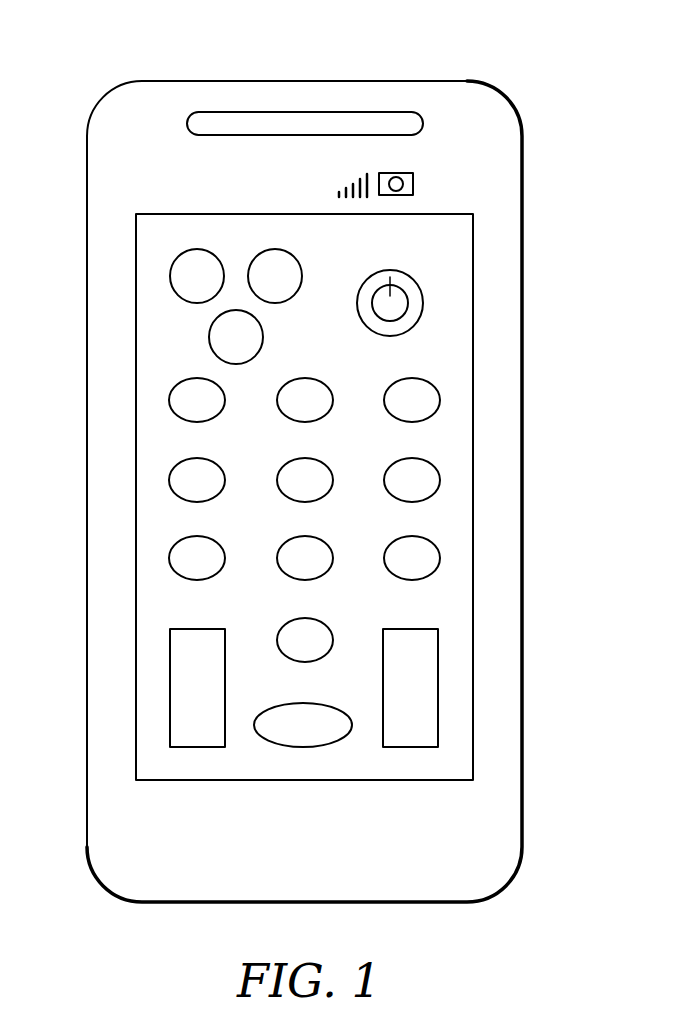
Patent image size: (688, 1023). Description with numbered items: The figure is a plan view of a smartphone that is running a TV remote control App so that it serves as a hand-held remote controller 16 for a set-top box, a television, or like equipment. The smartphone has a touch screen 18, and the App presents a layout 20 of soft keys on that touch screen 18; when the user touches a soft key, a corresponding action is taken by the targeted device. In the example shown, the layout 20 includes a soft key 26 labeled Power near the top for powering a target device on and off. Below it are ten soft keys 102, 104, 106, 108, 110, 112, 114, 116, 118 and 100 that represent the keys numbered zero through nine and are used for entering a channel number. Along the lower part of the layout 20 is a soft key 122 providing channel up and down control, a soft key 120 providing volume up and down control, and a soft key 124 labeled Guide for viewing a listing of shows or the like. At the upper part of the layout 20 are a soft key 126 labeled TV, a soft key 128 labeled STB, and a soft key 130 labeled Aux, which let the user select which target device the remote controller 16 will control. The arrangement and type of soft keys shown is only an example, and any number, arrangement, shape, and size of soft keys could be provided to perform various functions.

The hand-held remote controller 16 is at (570, 67).
The touch screen 18 is at (455, 406).
The layout of soft keys 20 is at (165, 318).
The soft key labeled Power 26 is at (421, 313).
The soft key numbered 0 100 is at (331, 629).
The soft key numbered 1 102 is at (169, 400).
The soft key numbered 2 104 is at (318, 381).
The soft key numbered 3 106 is at (437, 388).
The soft key numbered 4 108 is at (169, 480).
The soft key numbered 5 110 is at (320, 461).
The soft key numbered 6 112 is at (440, 481).
The soft key numbered 7 114 is at (169, 558).
The soft key numbered 8 116 is at (320, 539).
The soft key numbered 9 118 is at (440, 559).
The volume soft key 120 is at (438, 663).
The channel soft key 122 is at (170, 690).
The soft key labeled Guide 124 is at (318, 746).
The soft key labeled TV 126 is at (205, 250).
The soft key labeled STB 128 is at (287, 250).
The soft key labeled Aux 130 is at (263, 337).